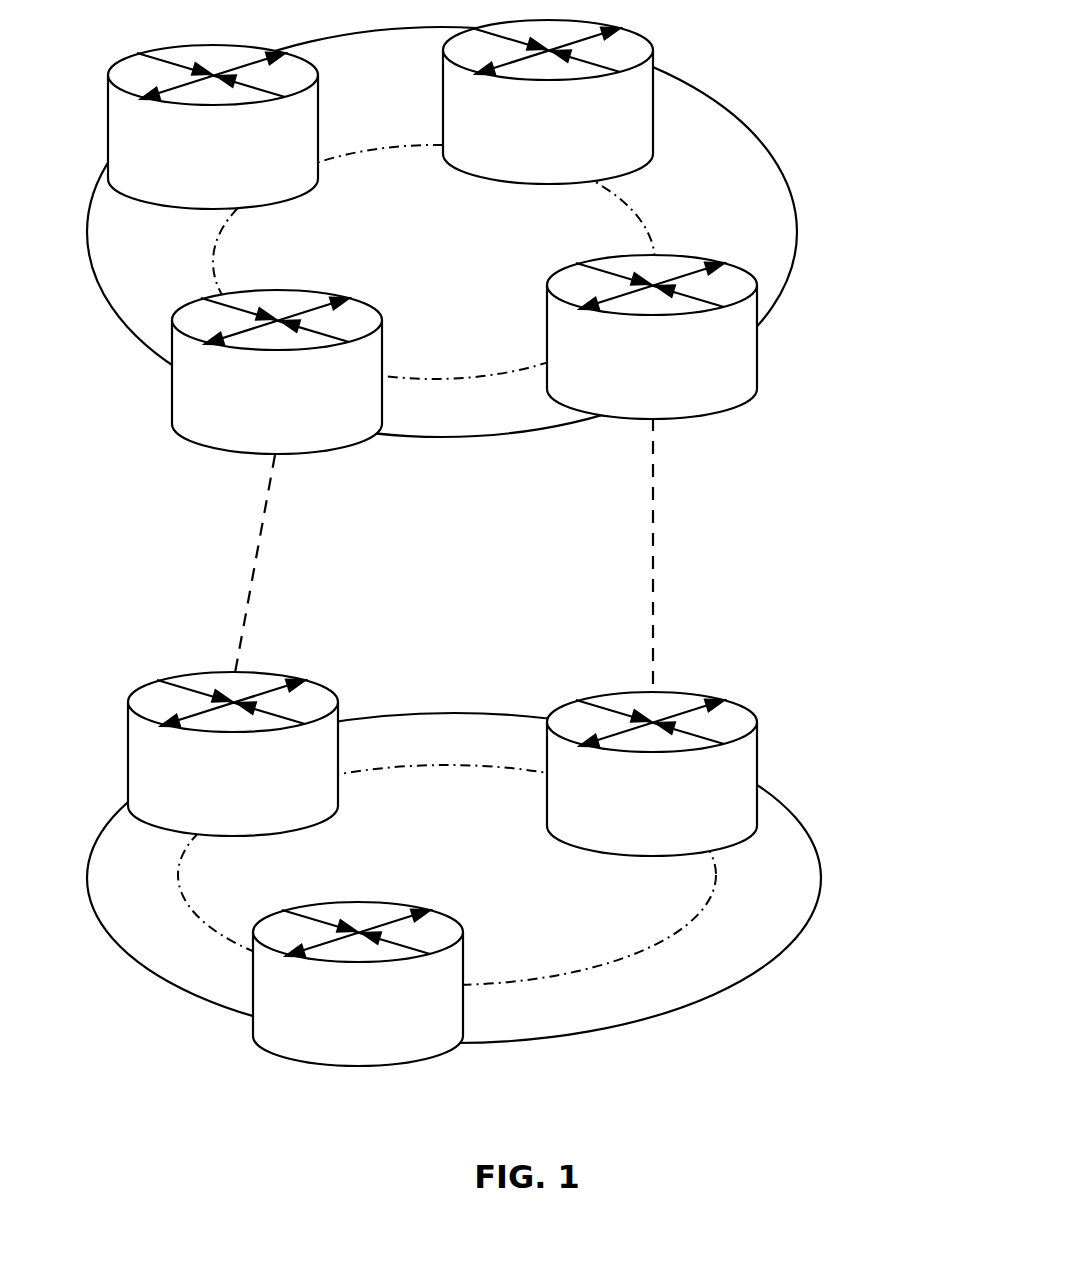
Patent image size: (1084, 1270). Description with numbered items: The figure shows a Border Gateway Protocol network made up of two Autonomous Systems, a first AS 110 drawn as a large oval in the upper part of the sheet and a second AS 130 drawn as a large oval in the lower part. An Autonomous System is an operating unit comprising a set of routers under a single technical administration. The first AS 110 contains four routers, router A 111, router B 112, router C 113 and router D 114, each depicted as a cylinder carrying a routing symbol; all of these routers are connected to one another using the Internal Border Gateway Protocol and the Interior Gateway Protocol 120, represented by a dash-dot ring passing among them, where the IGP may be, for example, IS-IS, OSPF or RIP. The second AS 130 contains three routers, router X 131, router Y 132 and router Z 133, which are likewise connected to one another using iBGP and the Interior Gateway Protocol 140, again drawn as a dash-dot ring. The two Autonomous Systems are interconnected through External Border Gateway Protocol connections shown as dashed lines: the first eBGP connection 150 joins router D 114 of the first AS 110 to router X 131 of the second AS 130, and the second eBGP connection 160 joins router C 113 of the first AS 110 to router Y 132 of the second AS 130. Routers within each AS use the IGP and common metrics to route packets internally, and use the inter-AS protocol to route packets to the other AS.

The first Autonomous System 110 is at (797, 227).
The router A 111 is at (191, 170).
The router B 112 is at (526, 144).
The router C 113 is at (630, 380).
The router D 114 is at (255, 415).
The Interior Gateway Protocol 120 is at (618, 197).
The second Autonomous System 130 is at (768, 967).
The router X 131 is at (211, 798).
The router Y 132 is at (630, 818).
The router Z 133 is at (336, 1028).
The Interior Gateway Protocol 140 is at (715, 873).
The first eBGP connection 150 is at (237, 653).
The second eBGP connection 160 is at (654, 603).